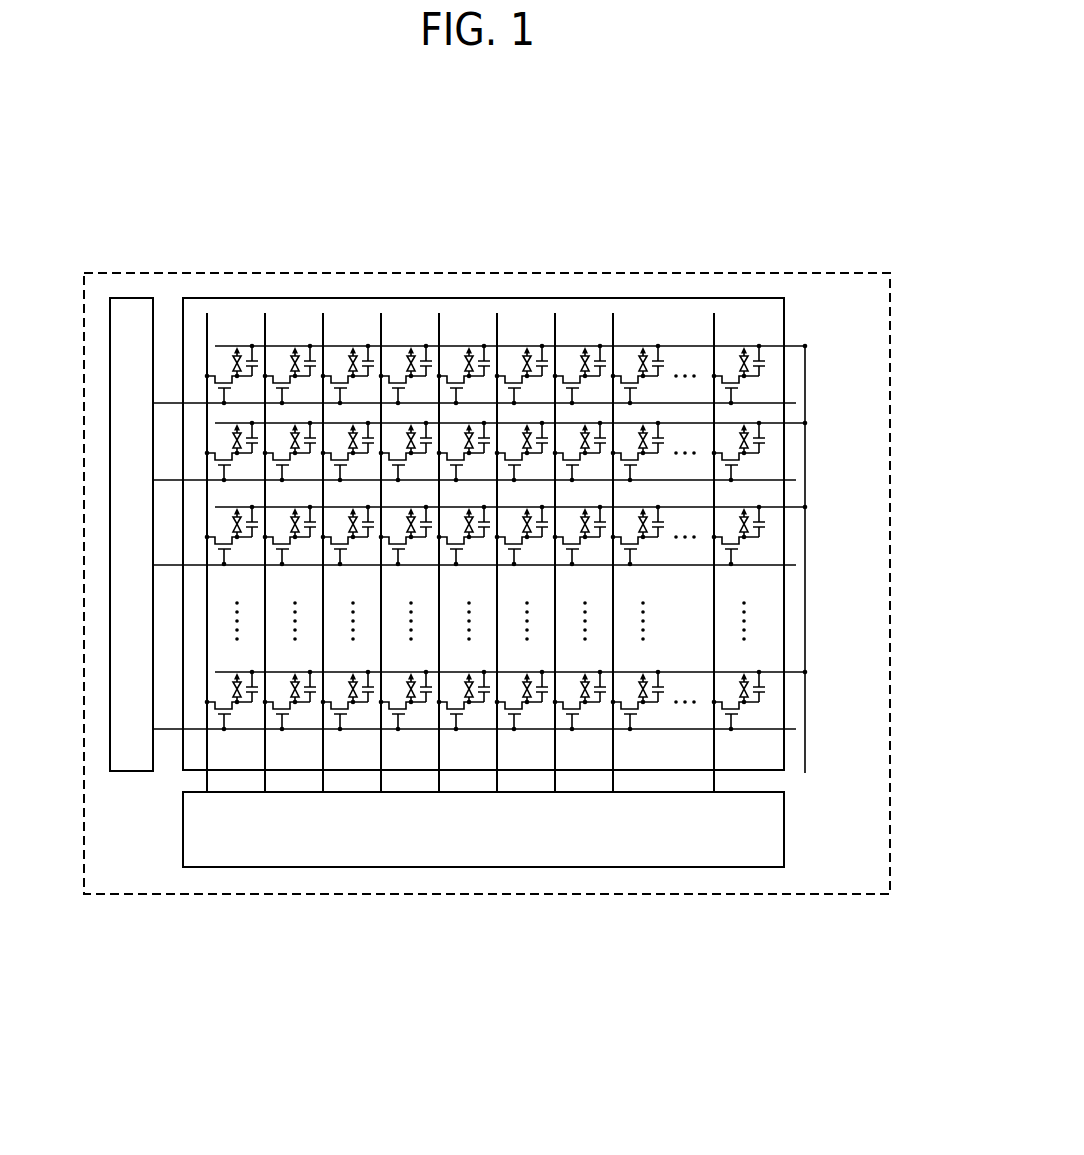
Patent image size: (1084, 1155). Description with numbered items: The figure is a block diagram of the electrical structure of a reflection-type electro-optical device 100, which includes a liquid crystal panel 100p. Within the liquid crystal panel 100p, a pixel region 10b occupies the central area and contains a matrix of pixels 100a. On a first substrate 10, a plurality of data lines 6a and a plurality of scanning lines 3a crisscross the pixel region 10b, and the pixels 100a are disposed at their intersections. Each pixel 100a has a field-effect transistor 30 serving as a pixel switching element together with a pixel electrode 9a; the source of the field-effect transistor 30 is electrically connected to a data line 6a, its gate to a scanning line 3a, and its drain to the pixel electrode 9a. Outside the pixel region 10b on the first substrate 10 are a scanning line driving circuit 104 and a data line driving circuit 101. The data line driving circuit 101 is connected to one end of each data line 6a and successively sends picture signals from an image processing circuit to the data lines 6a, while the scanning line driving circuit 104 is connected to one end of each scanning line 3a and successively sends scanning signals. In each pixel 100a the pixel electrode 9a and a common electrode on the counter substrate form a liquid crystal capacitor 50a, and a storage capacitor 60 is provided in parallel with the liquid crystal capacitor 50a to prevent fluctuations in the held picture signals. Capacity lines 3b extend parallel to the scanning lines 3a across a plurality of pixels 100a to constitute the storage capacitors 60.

The electro-optical device 100 is at (487, 535).
The first substrate 10 is at (487, 535).
The liquid crystal panel 100p is at (464, 272).
The scanning line driving circuit 104 is at (132, 298).
The data line driving circuit 101 is at (705, 867).
The field-effect transistor 30 is at (477, 491).
The pixel region 10b is at (568, 298).
The data line 6a is at (383, 327).
The scanning line 3a is at (700, 402).
The capacity line 3b is at (671, 344).
The liquid crystal capacitor 50a is at (240, 356).
The storage capacitor 60 is at (257, 374).
The pixel electrode 9a is at (242, 378).
The pixel 100a is at (277, 352).